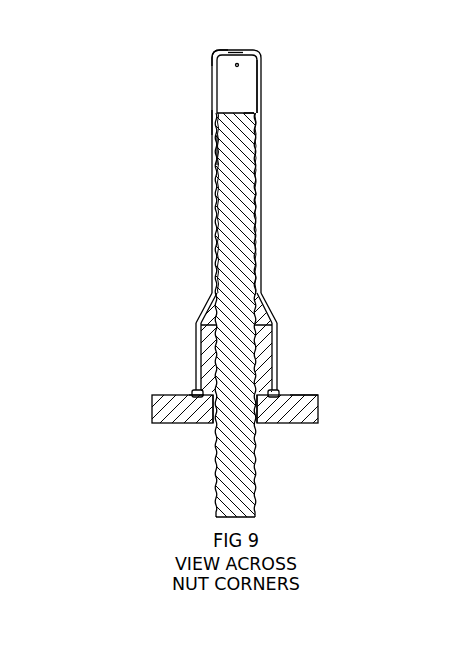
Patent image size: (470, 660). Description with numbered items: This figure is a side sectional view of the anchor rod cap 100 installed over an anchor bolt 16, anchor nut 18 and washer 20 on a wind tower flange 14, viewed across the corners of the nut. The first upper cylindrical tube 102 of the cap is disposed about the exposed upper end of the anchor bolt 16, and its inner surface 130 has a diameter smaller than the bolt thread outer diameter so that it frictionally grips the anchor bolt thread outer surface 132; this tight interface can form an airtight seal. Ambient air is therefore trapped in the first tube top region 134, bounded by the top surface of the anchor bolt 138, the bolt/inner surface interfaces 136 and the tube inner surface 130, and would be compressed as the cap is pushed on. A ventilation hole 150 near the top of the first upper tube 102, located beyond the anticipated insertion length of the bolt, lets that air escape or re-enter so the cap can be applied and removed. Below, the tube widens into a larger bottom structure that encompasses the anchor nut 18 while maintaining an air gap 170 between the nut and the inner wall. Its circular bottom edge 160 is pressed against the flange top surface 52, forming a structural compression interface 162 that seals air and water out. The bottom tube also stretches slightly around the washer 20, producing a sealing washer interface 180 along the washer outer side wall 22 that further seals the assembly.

The wind tower flange 14 is at (310, 417).
The anchor bolt 16 is at (245, 163).
The anchor nut 18 is at (210, 330).
The washer 20 is at (267, 395).
The washer outer side wall 22 is at (208, 397).
The flange top surface 52 is at (305, 393).
The anchor rod cap 100 is at (277, 93).
The first upper cylindrical tube 102 is at (209, 148).
The inner surface of first upper tube 130 is at (252, 82).
The anchor bolt thread outer surface 132 is at (260, 315).
The first tube top region 134 is at (220, 57).
The bolt/inner surface interfaces 136 is at (209, 120).
The top surface of the anchor bolt 138 is at (247, 110).
The ventilation hole 150 is at (242, 58).
The circular bottom edge 160 is at (188, 395).
The structural compression interface 162 is at (192, 392).
The air gap 170 is at (193, 328).
The sealing washer interface 180 is at (273, 393).